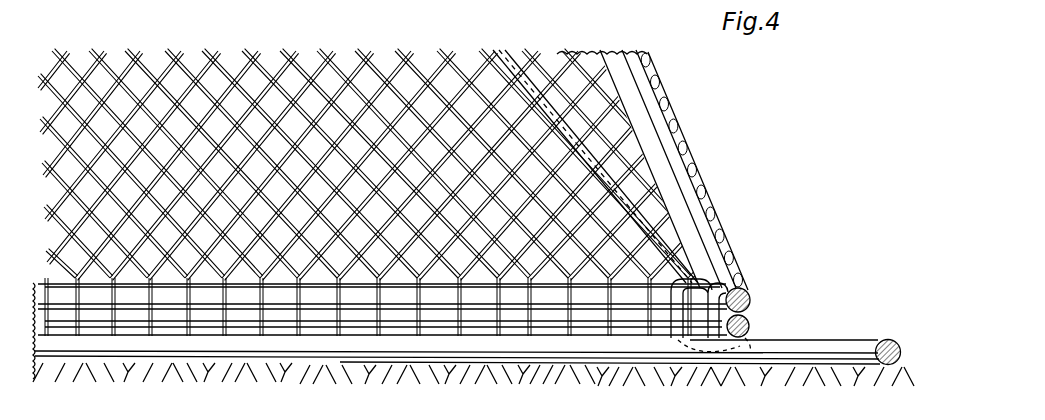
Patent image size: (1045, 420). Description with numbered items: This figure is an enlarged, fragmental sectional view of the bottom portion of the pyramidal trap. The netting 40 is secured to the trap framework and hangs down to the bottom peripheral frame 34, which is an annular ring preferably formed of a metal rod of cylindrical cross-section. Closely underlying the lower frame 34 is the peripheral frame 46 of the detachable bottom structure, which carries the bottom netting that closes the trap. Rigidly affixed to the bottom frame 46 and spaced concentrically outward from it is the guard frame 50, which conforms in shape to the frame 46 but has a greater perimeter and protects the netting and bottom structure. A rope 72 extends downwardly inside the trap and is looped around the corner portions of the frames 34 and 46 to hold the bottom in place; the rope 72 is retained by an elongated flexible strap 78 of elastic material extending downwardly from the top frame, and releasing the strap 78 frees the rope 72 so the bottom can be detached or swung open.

The netting 40 is at (360, 55).
The rope 72 is at (505, 56).
The elongated flexible strap 78 is at (634, 110).
The bottom peripheral frame 34 is at (748, 296).
The peripheral frame 46 is at (749, 326).
The peripheral frame 50 is at (838, 350).